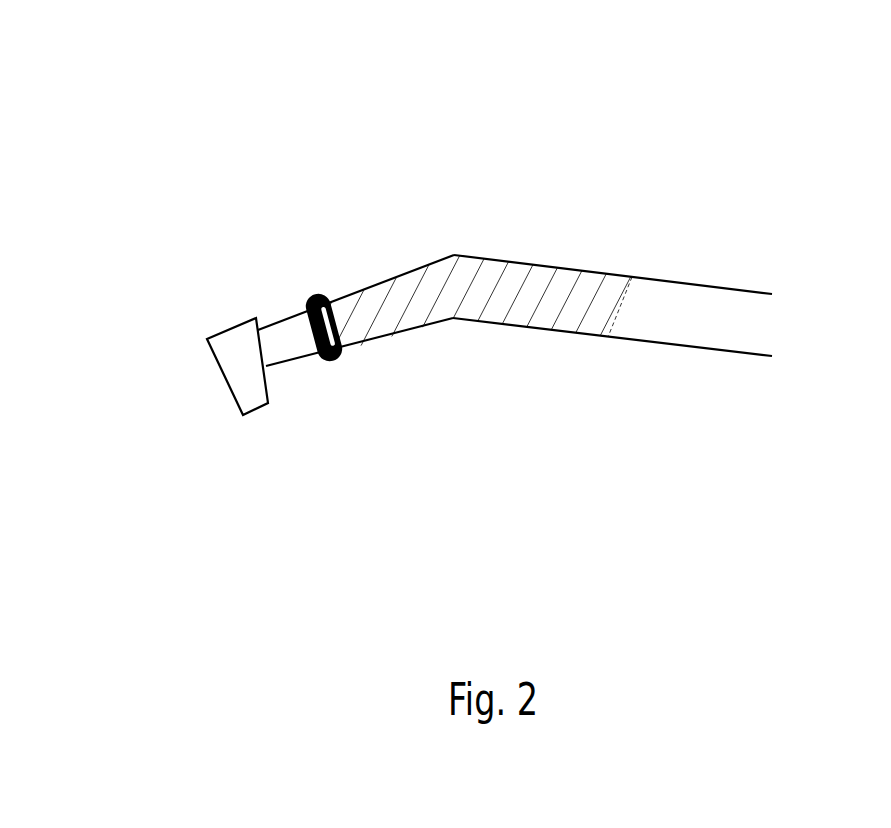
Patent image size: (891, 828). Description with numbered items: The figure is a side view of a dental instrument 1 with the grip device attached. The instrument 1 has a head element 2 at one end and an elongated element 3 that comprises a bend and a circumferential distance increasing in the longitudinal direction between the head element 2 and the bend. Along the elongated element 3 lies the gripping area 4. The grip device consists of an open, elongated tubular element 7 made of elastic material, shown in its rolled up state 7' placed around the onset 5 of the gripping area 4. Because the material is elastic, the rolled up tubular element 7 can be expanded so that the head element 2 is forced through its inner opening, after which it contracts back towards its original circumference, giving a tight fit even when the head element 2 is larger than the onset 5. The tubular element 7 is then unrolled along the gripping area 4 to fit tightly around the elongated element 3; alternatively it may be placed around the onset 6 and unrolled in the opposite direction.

The instrument 1 is at (739, 236).
The head element 2 is at (225, 347).
The elongated element 3 is at (662, 307).
The gripping area 4 is at (495, 287).
The onset of the gripping area 5 is at (332, 367).
The onset of the gripping area 6 is at (623, 307).
The tubular element 7 is at (278, 223).
The rolled up state 7' is at (334, 256).